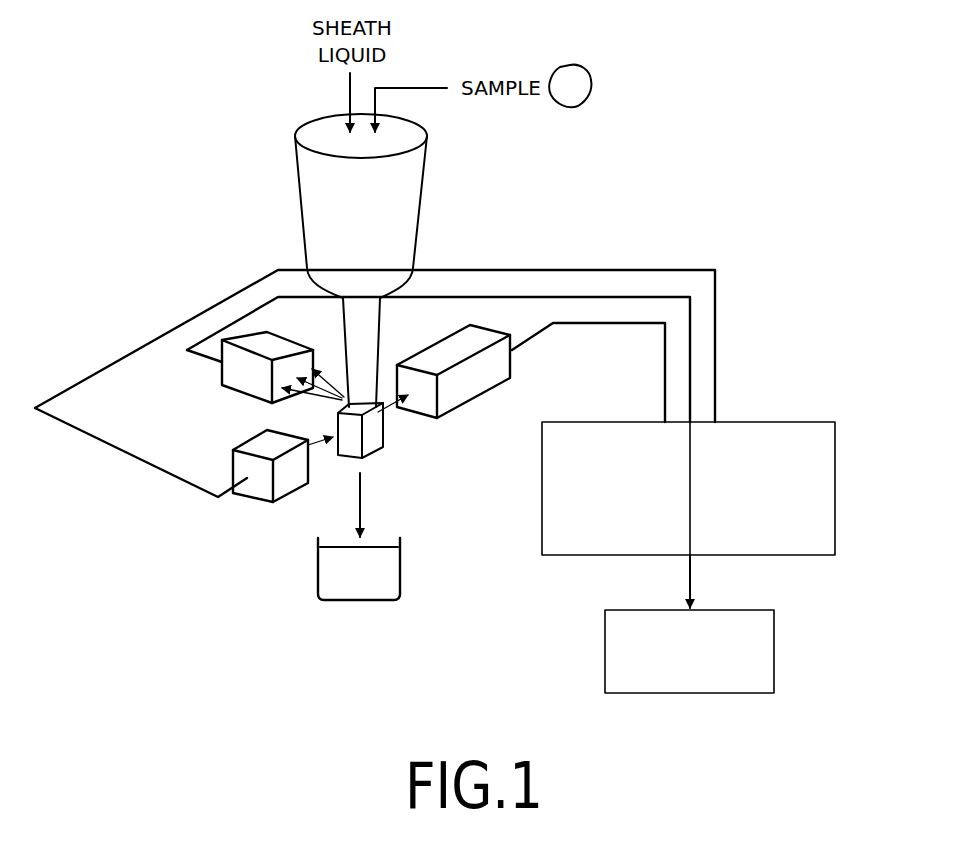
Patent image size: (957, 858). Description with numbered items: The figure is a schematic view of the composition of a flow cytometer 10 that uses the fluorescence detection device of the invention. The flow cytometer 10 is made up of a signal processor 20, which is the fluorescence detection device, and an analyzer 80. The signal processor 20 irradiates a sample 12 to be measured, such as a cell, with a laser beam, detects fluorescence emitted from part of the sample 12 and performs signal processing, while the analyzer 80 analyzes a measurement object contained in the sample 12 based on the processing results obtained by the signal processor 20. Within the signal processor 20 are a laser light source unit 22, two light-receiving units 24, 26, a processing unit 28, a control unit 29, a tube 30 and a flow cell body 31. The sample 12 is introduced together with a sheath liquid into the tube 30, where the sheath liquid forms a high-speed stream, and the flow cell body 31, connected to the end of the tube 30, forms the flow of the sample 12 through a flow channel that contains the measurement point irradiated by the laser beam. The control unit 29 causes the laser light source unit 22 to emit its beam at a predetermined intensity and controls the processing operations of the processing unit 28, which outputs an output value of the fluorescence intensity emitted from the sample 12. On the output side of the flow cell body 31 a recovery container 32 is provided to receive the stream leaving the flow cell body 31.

The flow cytometer 10 is at (212, 656).
The sample 12 is at (592, 87).
The signal processor 20 is at (451, 490).
The laser light source unit 22 is at (248, 502).
The light-receiving unit 24 is at (512, 365).
The light-receiving unit 26 is at (230, 390).
The processing unit 28 is at (803, 421).
The control unit 29 is at (542, 550).
The tube 30 is at (376, 333).
The flow cell body 31 is at (373, 433).
The recovery container 32 is at (362, 600).
The analyzer 80 is at (695, 693).